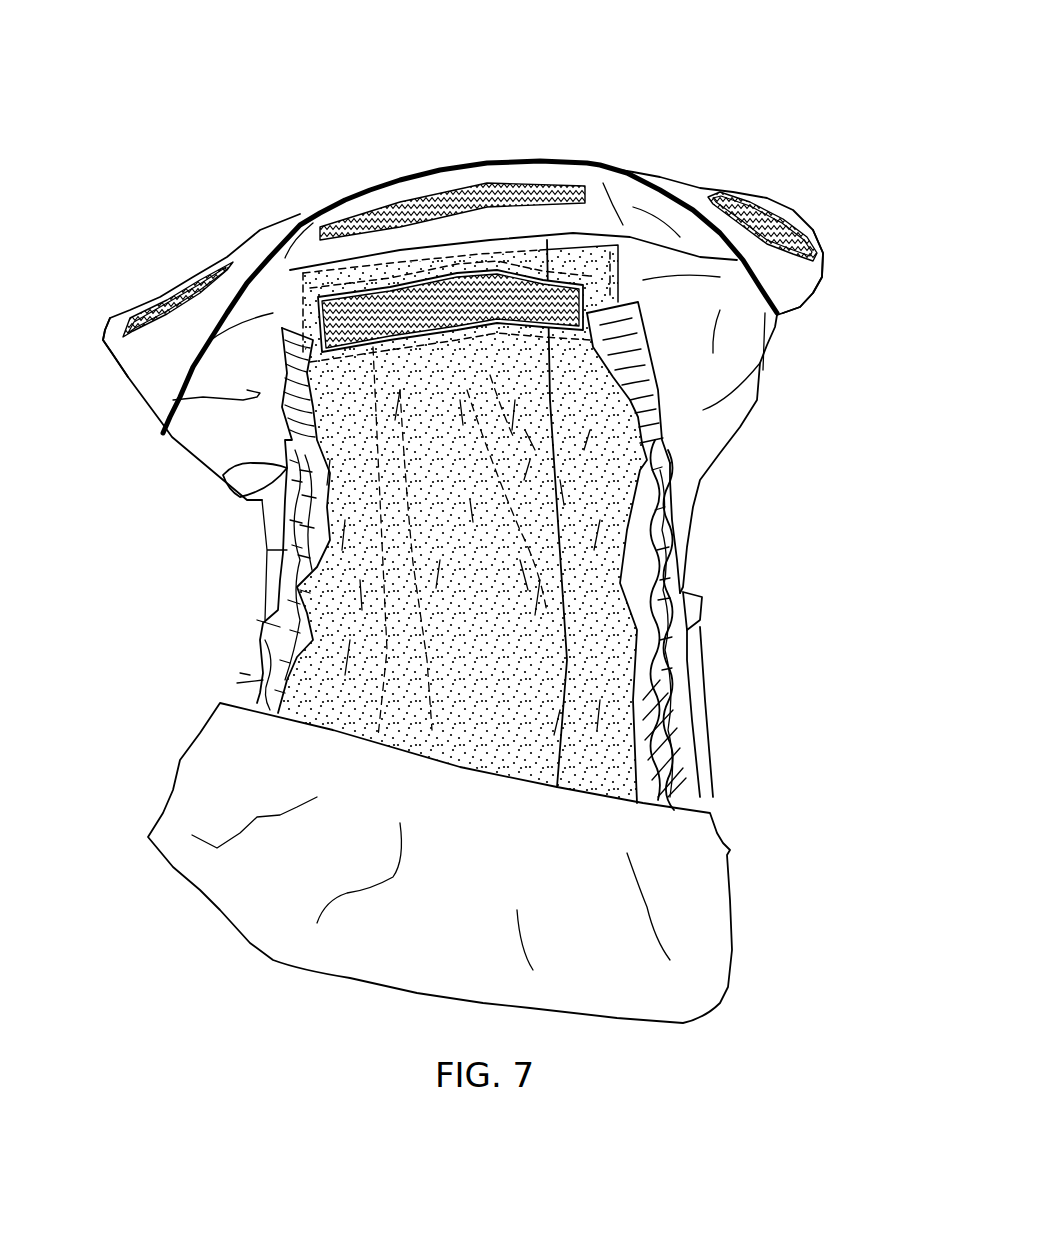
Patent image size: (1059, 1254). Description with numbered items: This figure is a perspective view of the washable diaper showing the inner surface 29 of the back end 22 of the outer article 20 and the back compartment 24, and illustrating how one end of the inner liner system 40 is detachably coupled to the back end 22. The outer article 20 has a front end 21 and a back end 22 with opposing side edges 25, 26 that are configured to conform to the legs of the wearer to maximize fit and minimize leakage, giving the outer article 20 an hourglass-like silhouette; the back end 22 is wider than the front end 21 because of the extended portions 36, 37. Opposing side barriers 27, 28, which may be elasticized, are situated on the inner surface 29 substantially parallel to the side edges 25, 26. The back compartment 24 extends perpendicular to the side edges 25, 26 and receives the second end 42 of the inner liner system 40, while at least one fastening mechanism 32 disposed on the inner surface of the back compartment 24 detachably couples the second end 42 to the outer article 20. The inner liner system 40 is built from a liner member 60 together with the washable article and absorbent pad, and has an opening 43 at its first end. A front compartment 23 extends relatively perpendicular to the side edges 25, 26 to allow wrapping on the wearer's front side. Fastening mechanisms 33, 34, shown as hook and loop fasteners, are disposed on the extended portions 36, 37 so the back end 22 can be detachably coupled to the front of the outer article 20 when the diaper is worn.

The outer article 20 is at (193, 457).
The front end 21 is at (270, 957).
The back end 22 is at (262, 228).
The front compartment 23 is at (570, 850).
The back compartment 24 is at (650, 203).
The side edge 25 is at (693, 515).
The side edge 26 is at (265, 567).
The side barrier 27 is at (683, 690).
The side barrier 28 is at (285, 630).
The inner surface 29 is at (743, 357).
The fastening mechanism 32 is at (560, 293).
The fastening mechanism 33 is at (772, 217).
The fastening mechanism 34 is at (170, 297).
The extended portion 36 is at (810, 283).
The extended portion 37 is at (125, 352).
The inner liner system 40 is at (535, 613).
The second end 42 is at (457, 252).
The opening 43 is at (395, 298).
The liner member 60 is at (610, 450).